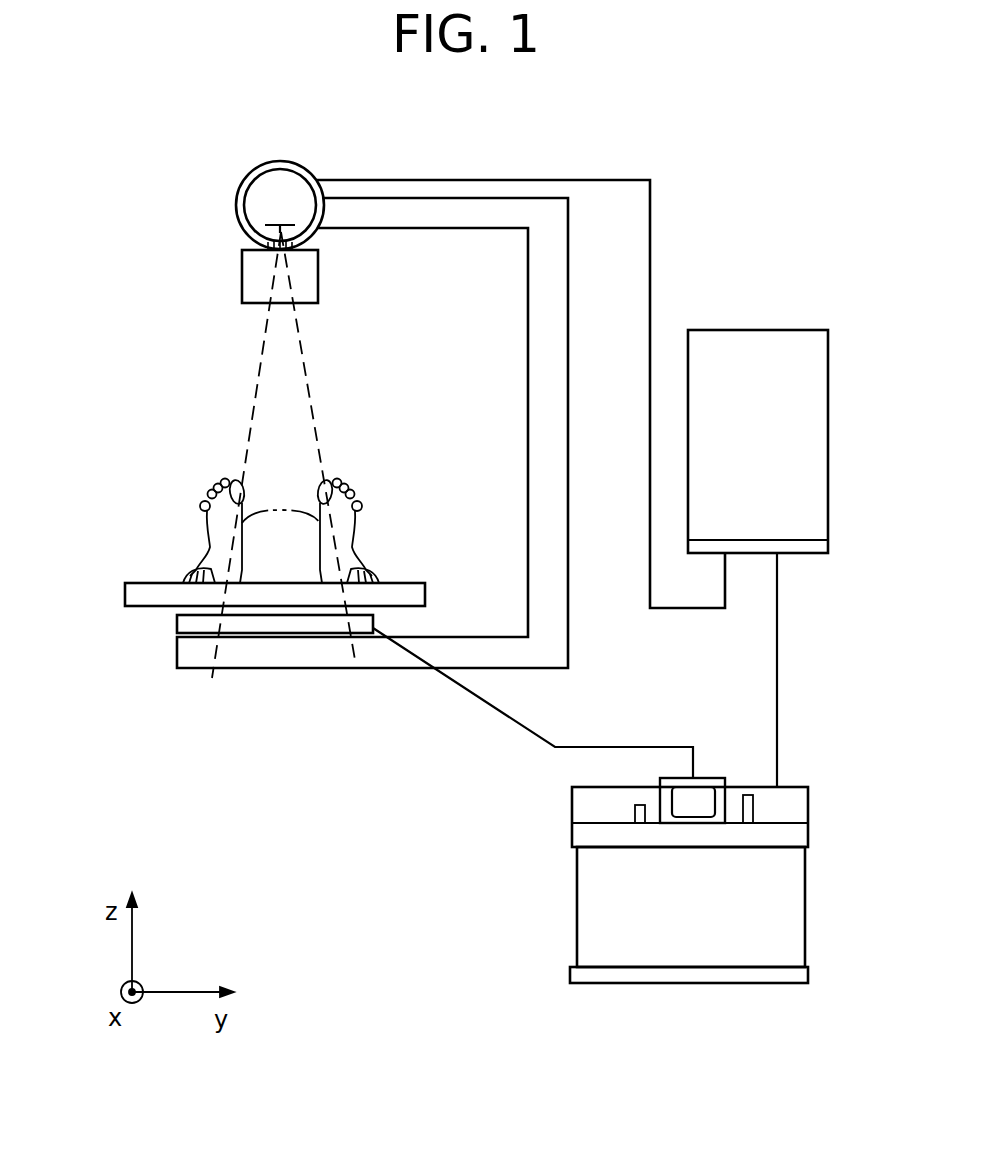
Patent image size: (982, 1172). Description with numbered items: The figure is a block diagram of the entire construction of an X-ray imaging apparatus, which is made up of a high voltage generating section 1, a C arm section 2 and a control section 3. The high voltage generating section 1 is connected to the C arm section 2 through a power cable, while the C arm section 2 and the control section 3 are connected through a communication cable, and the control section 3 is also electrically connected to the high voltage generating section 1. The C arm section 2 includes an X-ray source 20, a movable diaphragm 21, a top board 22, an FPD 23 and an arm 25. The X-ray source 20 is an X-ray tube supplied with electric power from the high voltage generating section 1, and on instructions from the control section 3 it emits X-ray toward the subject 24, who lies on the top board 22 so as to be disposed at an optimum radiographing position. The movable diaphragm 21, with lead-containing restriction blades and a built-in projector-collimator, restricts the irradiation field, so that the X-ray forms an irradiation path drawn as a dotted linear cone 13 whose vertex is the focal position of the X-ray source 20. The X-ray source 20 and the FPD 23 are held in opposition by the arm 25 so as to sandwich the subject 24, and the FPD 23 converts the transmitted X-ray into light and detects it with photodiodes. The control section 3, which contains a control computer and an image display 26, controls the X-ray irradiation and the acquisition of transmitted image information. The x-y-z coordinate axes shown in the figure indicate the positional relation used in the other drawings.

The high voltage generating section 1 is at (750, 330).
The C arm section 2 is at (203, 395).
The control section 3 is at (807, 898).
The linear cone 13 is at (262, 337).
The X-ray source 20 is at (296, 166).
The movable diaphragm 21 is at (242, 280).
The top board 22 is at (157, 583).
The FPD (Flat Panel Detector) 23 is at (222, 635).
The subject 24 is at (203, 485).
The arm 25 is at (568, 242).
The image display 26 is at (715, 800).